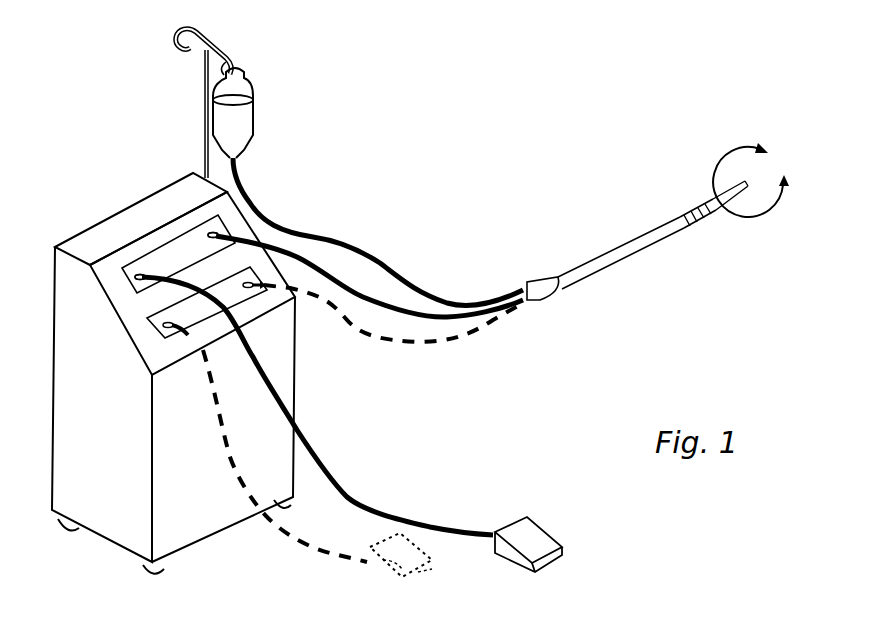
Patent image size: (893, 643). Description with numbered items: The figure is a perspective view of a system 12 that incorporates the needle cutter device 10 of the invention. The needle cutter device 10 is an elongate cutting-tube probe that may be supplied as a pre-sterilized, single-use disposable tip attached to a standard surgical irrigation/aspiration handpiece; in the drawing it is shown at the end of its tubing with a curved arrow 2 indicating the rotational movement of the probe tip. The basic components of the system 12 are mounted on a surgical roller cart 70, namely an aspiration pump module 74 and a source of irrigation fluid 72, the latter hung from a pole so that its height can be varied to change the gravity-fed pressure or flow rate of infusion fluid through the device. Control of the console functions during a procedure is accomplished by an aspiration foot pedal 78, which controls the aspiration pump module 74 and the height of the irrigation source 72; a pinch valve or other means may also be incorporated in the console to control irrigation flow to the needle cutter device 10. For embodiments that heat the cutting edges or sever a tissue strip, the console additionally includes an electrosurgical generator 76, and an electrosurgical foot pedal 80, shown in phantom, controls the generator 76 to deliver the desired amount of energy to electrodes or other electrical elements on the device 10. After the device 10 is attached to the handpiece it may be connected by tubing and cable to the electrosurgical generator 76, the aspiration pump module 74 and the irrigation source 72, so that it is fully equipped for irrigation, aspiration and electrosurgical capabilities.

The rotational oscillation direction of handpiece tip 2 is at (754, 179).
The needle cutter device 10 is at (598, 225).
The system 12 is at (114, 190).
The surgical roller cart 70 is at (182, 525).
The source of irrigation fluid 72 is at (240, 120).
The aspiration pump module 74 is at (157, 265).
The electrosurgical generator 76 is at (227, 292).
The aspiration foot pedal 78 is at (537, 543).
The electrosurgical foot pedal 80 is at (402, 565).